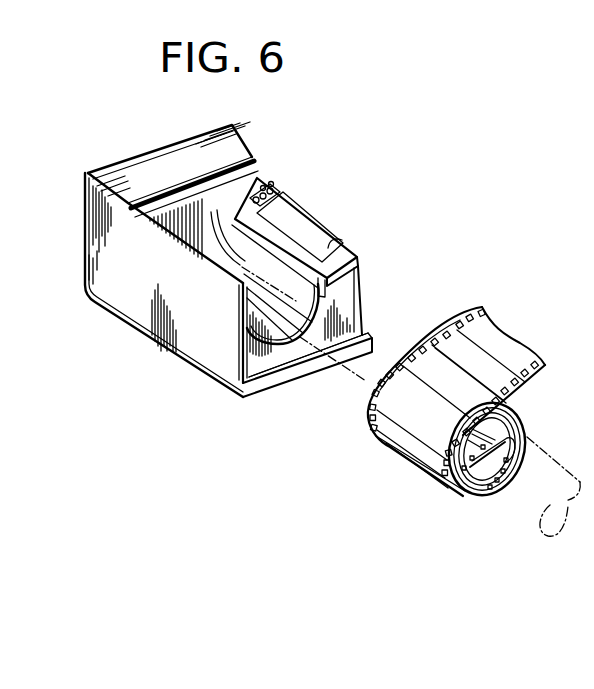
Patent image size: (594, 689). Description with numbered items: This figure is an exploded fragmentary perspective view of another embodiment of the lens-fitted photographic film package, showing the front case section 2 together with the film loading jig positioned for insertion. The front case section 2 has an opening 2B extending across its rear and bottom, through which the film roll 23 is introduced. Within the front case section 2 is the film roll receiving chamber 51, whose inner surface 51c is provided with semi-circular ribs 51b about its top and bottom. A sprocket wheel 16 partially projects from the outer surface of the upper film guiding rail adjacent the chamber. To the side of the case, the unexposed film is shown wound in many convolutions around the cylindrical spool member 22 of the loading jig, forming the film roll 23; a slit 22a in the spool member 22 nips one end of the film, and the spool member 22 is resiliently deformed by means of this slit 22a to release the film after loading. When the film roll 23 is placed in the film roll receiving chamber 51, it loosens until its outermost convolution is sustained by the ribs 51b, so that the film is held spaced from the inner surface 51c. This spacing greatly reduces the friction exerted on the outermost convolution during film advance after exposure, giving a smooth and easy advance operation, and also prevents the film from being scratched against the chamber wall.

The front case section 2 is at (160, 330).
The opening 2B is at (285, 382).
The sprocket wheel 16 is at (262, 178).
The film roll receiving chamber 51 is at (250, 263).
The semi-circular ribs 51b is at (182, 204).
The inner surface 51c is at (273, 260).
The cylindrical spool member 22 is at (548, 523).
The slit 22a is at (508, 487).
The film roll 23 is at (457, 495).